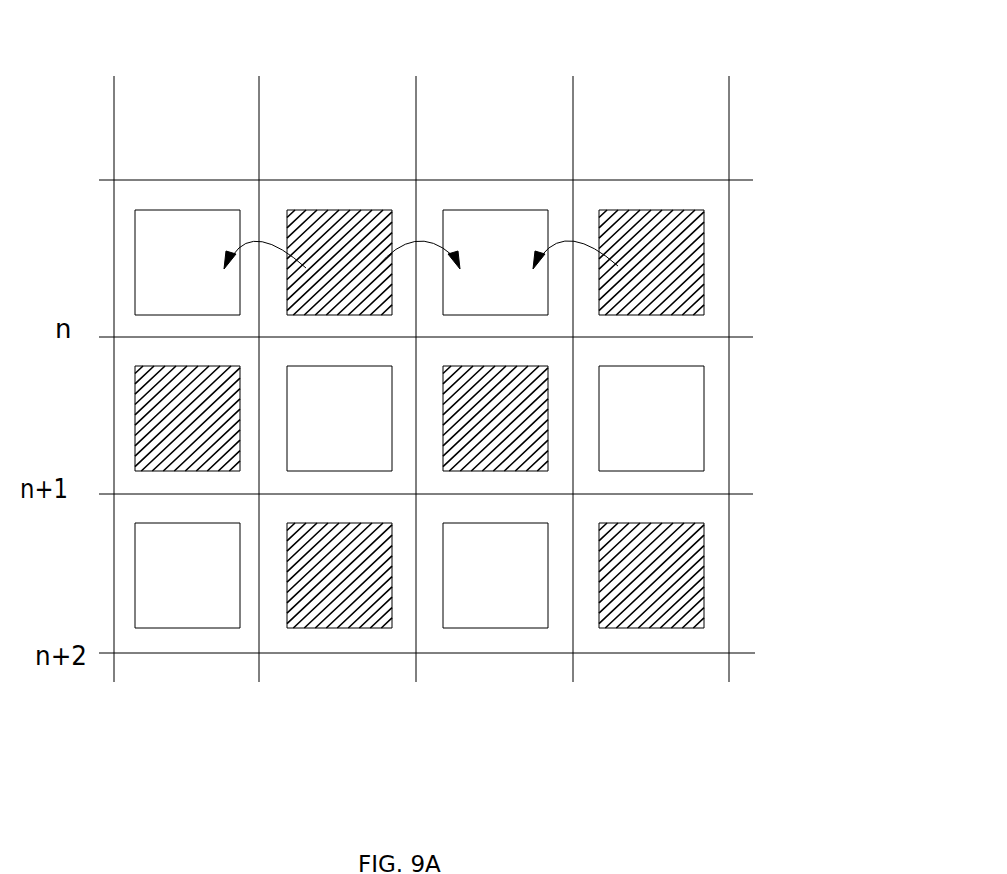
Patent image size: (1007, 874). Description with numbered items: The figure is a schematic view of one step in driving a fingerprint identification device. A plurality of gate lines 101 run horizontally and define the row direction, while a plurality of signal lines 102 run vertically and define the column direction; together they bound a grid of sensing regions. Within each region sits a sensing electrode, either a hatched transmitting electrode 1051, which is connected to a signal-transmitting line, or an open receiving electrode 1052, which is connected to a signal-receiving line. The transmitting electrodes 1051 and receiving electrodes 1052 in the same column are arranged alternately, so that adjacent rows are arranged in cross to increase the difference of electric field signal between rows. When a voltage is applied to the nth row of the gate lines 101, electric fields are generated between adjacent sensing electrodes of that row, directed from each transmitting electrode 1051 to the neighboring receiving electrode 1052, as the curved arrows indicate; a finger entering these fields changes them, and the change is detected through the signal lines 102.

The gate lines 101 is at (753, 180).
The signal lines 102 is at (259, 111).
The transmitting electrode 1051 is at (693, 592).
The receiving electrode 1052 is at (502, 602).